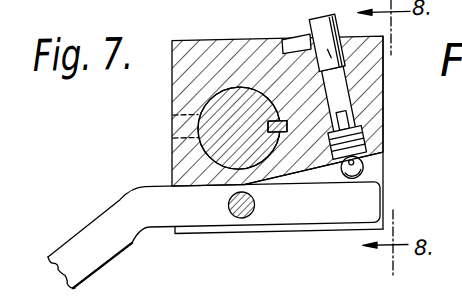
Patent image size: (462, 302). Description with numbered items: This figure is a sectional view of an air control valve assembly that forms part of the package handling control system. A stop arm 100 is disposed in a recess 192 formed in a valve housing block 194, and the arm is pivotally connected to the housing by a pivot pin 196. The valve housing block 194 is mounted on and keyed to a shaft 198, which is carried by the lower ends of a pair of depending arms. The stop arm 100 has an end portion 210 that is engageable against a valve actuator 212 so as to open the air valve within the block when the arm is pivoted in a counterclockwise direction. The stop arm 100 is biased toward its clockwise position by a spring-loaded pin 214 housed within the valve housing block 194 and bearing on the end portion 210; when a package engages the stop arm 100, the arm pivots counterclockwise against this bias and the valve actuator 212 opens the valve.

The stop arm 100 is at (92, 204).
The recess 192 is at (385, 165).
The valve housing block 194 is at (216, 46).
The pivot pin 196 is at (236, 216).
The shaft 198 is at (200, 110).
The end portion 210 is at (357, 219).
The valve actuator 212 is at (345, 174).
The spring-loaded pin 214 is at (352, 167).